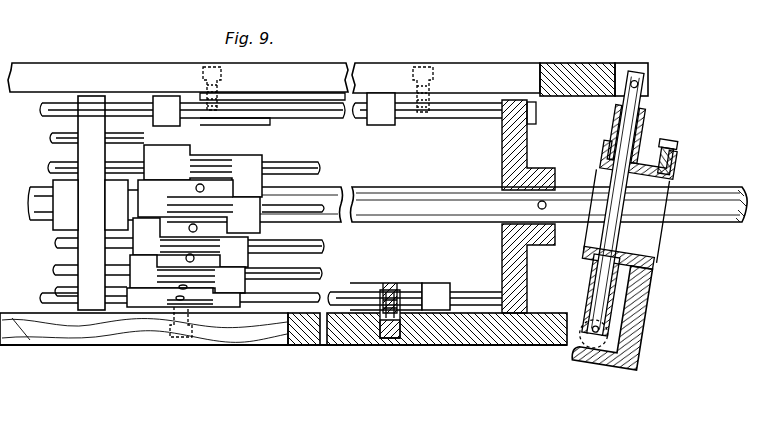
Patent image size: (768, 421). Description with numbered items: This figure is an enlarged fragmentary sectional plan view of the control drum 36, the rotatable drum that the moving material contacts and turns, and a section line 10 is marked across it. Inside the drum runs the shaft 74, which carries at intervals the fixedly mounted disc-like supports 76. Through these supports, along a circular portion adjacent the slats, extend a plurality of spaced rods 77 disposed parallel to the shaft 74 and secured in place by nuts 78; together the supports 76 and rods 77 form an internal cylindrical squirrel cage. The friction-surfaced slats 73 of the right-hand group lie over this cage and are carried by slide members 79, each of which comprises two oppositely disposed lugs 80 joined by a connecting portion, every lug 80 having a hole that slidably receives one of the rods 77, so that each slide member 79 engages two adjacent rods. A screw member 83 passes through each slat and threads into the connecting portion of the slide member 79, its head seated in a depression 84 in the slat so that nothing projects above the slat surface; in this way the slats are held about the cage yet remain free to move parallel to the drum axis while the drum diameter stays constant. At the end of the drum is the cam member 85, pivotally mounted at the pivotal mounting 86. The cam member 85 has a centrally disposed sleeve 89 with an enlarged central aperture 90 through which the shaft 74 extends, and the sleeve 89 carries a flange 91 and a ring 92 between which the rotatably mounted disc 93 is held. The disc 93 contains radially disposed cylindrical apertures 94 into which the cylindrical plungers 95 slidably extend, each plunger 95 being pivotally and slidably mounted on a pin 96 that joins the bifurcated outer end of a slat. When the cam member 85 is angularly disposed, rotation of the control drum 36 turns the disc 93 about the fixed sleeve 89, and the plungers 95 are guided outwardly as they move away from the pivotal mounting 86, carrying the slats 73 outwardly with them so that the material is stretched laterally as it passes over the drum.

The section line 10- 10 is at (121, 130).
The control drum 36 is at (562, 65).
The slats 73 is at (478, 78).
The shaft 74 is at (690, 203).
The disc-like supports 76 is at (80, 150).
The rods 77 is at (304, 166).
The nuts 78 is at (533, 118).
The slide members 79 is at (262, 162).
The lugs 80 is at (246, 160).
The screw member 83 is at (423, 67).
The depression 84 is at (211, 68).
The cam member 85 is at (652, 326).
The pivotal mounting 86 is at (580, 346).
The sleeve 89 is at (656, 265).
The central aperture 90 is at (655, 238).
The flange 91 is at (616, 152).
The ring 92 is at (662, 136).
The disc 93 is at (645, 122).
The cylindrical apertures 94 is at (614, 118).
The plungers 95 is at (638, 108).
The pin 96 is at (638, 72).